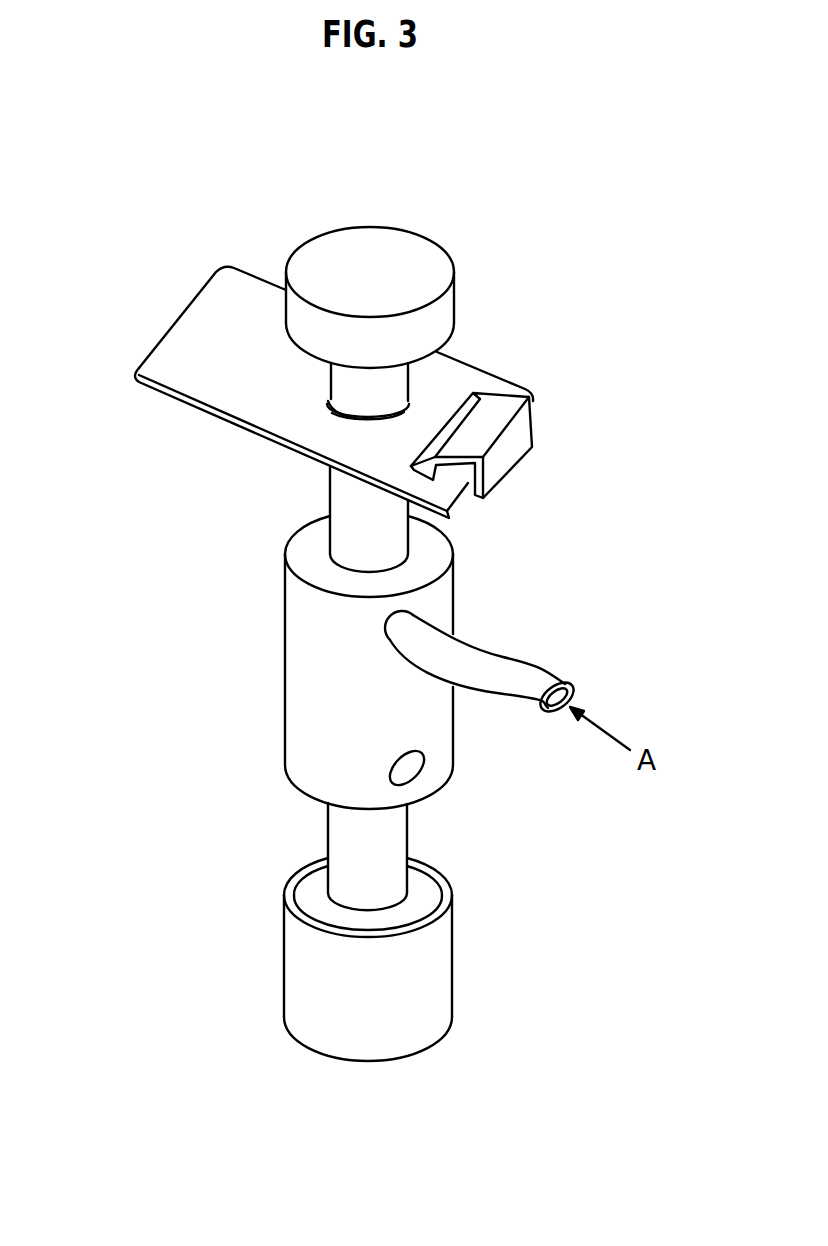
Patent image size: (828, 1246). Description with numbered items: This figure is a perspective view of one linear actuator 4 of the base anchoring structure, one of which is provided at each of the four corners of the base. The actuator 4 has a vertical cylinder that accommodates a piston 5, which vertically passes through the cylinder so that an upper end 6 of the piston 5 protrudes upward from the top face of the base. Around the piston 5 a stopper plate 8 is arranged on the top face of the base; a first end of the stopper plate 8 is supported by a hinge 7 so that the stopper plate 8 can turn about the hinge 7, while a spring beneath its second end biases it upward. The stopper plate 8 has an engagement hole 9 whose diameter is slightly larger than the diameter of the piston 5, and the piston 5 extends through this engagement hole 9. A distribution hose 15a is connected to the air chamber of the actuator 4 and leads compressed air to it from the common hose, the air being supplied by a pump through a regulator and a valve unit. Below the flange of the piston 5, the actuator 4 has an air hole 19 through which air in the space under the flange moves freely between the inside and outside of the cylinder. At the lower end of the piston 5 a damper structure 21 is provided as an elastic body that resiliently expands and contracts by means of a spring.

The linear actuator 4 is at (285, 725).
The piston 5 is at (358, 535).
The upper end 6 is at (363, 238).
The hinge 7 is at (512, 452).
The stopper plate 8 is at (187, 320).
The engagement hole 9 is at (327, 399).
The distribution hose 15a is at (498, 650).
The air hole 19 is at (416, 768).
The damper structure 21 is at (452, 968).